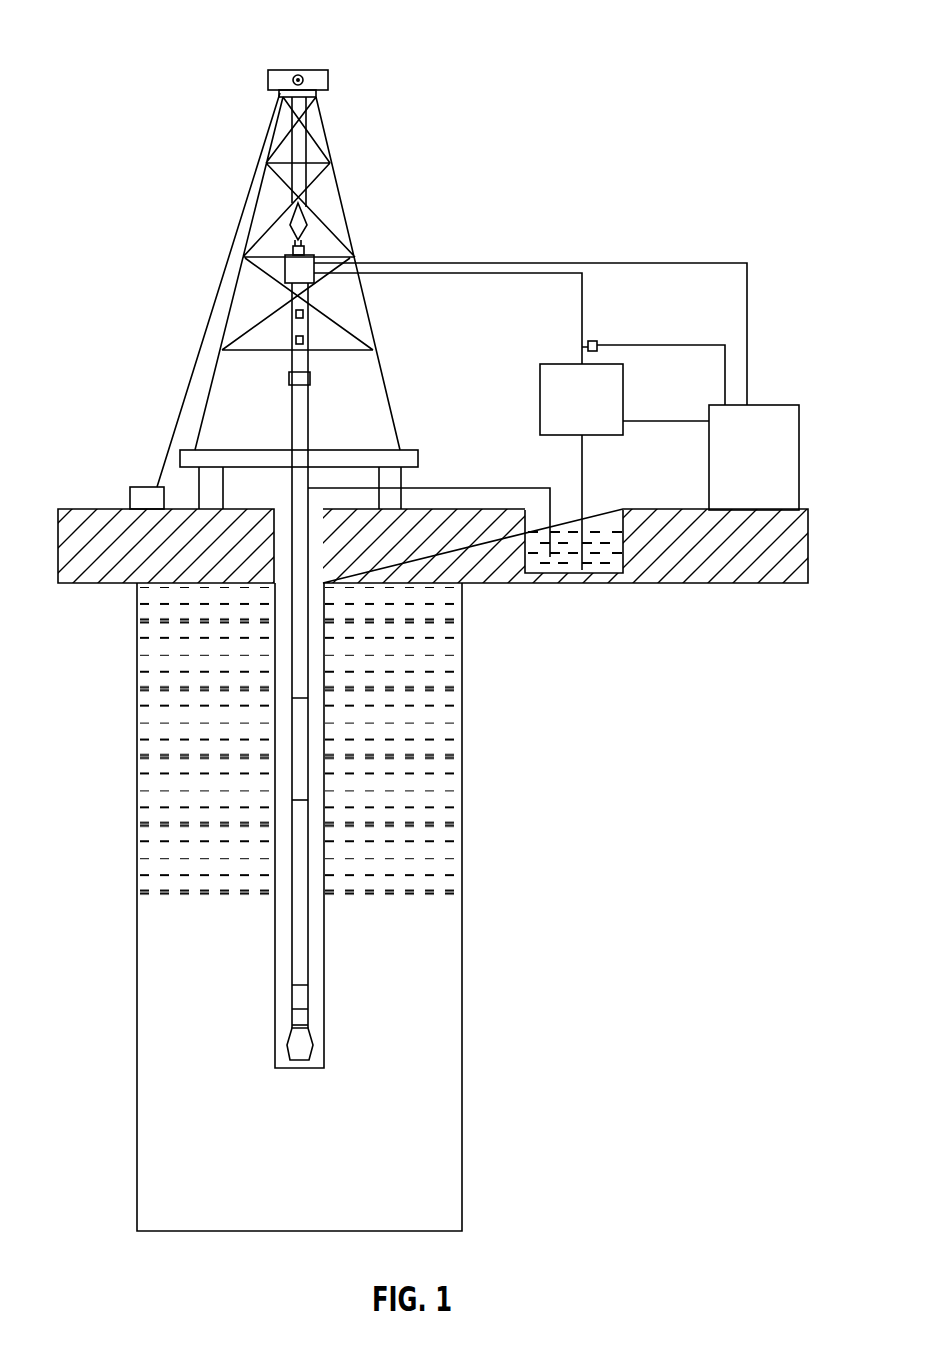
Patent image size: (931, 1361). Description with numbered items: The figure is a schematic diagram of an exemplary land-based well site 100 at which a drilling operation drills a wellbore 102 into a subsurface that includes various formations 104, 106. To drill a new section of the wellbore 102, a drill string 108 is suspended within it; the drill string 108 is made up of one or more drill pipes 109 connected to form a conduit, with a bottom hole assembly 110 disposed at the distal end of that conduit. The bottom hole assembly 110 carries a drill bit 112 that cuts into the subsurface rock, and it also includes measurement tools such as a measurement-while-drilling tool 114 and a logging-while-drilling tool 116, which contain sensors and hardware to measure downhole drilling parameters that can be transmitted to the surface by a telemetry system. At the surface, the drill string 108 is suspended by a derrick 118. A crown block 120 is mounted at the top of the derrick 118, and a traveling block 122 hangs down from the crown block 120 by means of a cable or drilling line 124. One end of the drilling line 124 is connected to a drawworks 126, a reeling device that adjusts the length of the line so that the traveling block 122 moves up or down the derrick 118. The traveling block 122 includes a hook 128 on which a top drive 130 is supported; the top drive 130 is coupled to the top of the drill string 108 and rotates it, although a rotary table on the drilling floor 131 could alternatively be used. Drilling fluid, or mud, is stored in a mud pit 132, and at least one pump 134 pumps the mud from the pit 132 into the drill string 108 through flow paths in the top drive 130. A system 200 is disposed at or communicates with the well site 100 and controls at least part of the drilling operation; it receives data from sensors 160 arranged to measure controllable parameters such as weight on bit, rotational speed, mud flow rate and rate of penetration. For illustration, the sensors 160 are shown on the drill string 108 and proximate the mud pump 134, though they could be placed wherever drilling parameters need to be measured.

The well site 100 is at (339, 101).
The wellbore 102 is at (317, 727).
The formation 104 is at (448, 645).
The formation 106 is at (448, 928).
The drill string 108 is at (275, 873).
The drill pipe 109 is at (300, 677).
The bottom hole assembly 110 is at (275, 998).
The drill bit 112 is at (310, 1057).
The measurement-while-drilling tool 114 is at (297, 999).
The logging-while-drilling tool 116 is at (297, 1022).
The derrick 118 is at (337, 187).
The crown block 120 is at (298, 72).
The traveling block 122 is at (305, 227).
The drilling line 124 is at (305, 153).
The drawworks 126 is at (140, 487).
The hook 128 is at (295, 247).
The top drive 130 is at (285, 270).
The drilling floor 131 is at (335, 450).
The mud pit 132 is at (617, 515).
The pump 134 is at (623, 396).
The sensor 160 is at (303, 314).
The system 200 is at (770, 405).